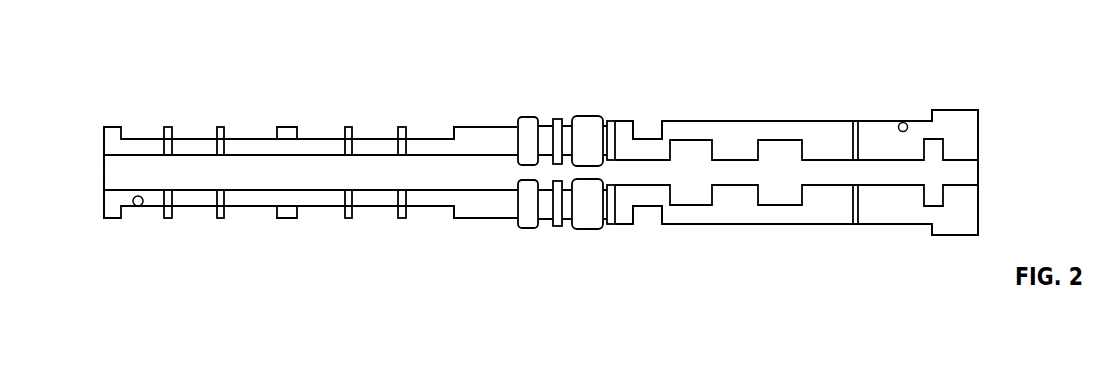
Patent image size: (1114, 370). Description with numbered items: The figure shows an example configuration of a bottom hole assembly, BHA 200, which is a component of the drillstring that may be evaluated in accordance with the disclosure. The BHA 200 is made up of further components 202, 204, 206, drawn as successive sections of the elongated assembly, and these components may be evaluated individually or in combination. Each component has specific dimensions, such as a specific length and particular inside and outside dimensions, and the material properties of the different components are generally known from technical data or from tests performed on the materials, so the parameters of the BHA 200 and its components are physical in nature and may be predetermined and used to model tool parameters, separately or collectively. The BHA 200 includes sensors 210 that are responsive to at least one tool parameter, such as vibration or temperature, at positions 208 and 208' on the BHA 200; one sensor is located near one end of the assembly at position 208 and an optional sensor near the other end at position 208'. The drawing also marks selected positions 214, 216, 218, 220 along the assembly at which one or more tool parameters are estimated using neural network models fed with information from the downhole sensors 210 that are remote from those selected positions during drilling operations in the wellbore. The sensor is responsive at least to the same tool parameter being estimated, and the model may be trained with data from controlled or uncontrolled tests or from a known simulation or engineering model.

The BHA 200 is at (507, 160).
The component 202 is at (377, 207).
The component 204 is at (588, 229).
The component 206 is at (207, 206).
The position 208 is at (170, 237).
The position 208' is at (872, 112).
The sensor 210 is at (125, 225).
The selected position 214 is at (288, 127).
The selected position 216 is at (487, 218).
The selected position 218 is at (588, 116).
The selected position 220 is at (653, 207).